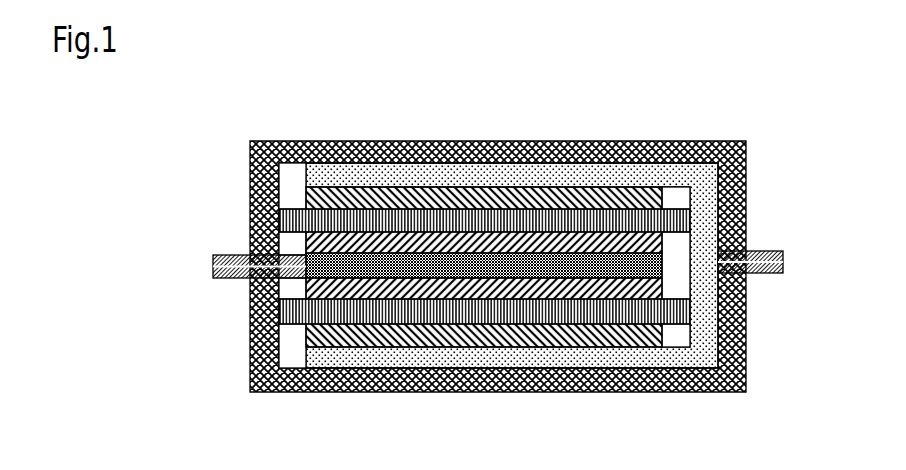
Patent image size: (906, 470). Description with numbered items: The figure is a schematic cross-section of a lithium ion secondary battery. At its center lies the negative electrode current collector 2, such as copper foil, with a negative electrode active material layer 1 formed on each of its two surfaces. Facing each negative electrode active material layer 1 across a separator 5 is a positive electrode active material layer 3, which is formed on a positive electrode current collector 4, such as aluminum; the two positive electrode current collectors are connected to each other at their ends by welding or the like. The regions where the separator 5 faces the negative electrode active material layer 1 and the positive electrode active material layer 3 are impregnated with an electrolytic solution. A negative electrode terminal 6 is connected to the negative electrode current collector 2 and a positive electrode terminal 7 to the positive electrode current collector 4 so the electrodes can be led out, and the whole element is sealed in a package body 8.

The negative electrode active material layer 1 is at (307, 290).
The negative electrode current collector 2 is at (307, 253).
The positive electrode active material layer 3 is at (668, 336).
The positive electrode current collector 4 is at (705, 228).
The separator 5 is at (512, 304).
The negative electrode terminal 6 is at (214, 270).
The positive electrode terminal 7 is at (784, 263).
The package body 8 is at (570, 158).